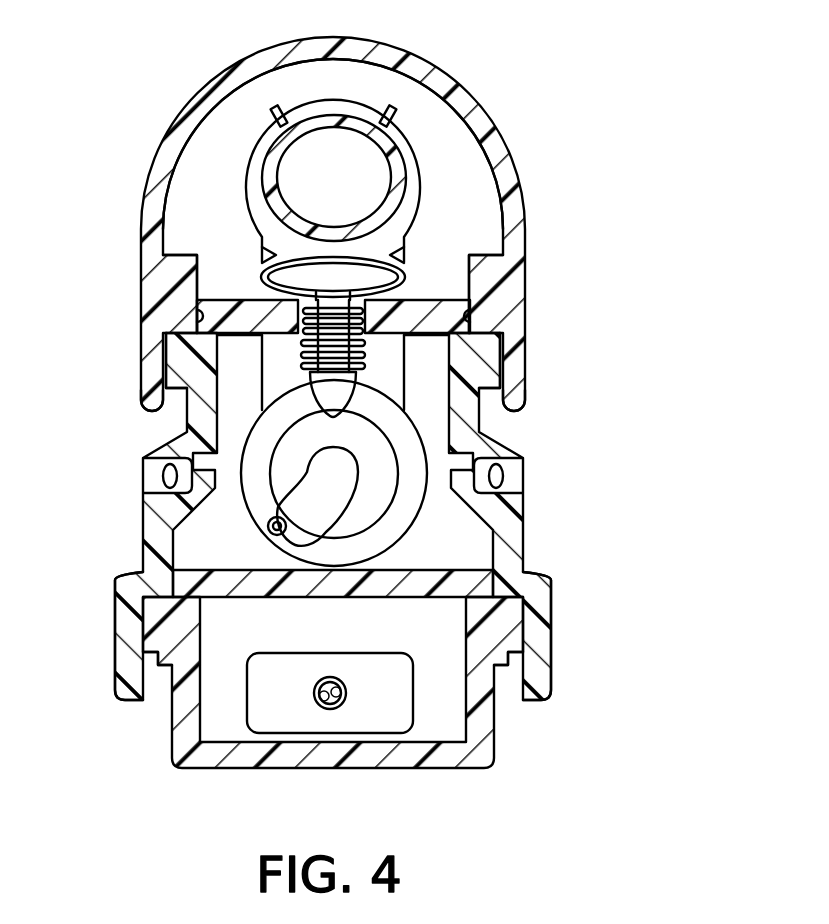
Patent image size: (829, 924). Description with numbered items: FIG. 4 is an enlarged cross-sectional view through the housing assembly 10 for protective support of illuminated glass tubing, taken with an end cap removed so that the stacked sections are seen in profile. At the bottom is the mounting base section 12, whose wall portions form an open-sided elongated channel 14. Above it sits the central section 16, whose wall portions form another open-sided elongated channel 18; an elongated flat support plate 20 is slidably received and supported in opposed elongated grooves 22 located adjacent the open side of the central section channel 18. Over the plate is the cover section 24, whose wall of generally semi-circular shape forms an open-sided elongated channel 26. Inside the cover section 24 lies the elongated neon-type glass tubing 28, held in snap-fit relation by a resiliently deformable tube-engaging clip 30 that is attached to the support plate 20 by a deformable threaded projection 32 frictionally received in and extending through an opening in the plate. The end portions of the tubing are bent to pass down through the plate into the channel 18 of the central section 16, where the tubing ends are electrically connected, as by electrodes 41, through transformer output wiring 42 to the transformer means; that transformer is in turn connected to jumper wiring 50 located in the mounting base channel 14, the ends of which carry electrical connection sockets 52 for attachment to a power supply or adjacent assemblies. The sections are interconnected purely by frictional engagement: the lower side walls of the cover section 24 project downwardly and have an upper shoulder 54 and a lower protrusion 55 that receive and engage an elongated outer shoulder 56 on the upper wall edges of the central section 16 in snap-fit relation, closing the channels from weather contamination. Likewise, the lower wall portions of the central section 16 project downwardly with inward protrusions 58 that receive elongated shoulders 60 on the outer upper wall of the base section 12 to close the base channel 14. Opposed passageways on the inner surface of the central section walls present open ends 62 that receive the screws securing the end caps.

The housing assembly 10 is at (595, 186).
The mounting base section 12 is at (503, 766).
The elongated channel 14 is at (225, 728).
The central section 16 is at (531, 547).
The elongated channel 18 is at (202, 545).
The support plate 20 is at (248, 312).
The grooves 22 is at (467, 308).
The cover section 24 is at (463, 78).
The elongated channel 26 is at (462, 158).
The glass tubing 28 is at (327, 103).
The tube-engaging clips 30 is at (246, 174).
The threaded projection 32 is at (363, 365).
The electrodes 41 is at (292, 403).
The transformer output wiring 42 is at (332, 490).
The jumper wiring 50 is at (342, 708).
The electrical connection sockets 52 is at (377, 715).
The upper shoulder 54 is at (485, 252).
The lower protrusion 55 is at (497, 400).
The outer shoulder 56 is at (500, 323).
The inward protrusions 58 is at (517, 670).
The shoulders 60 is at (498, 637).
The open ends of passageways 62 is at (497, 477).